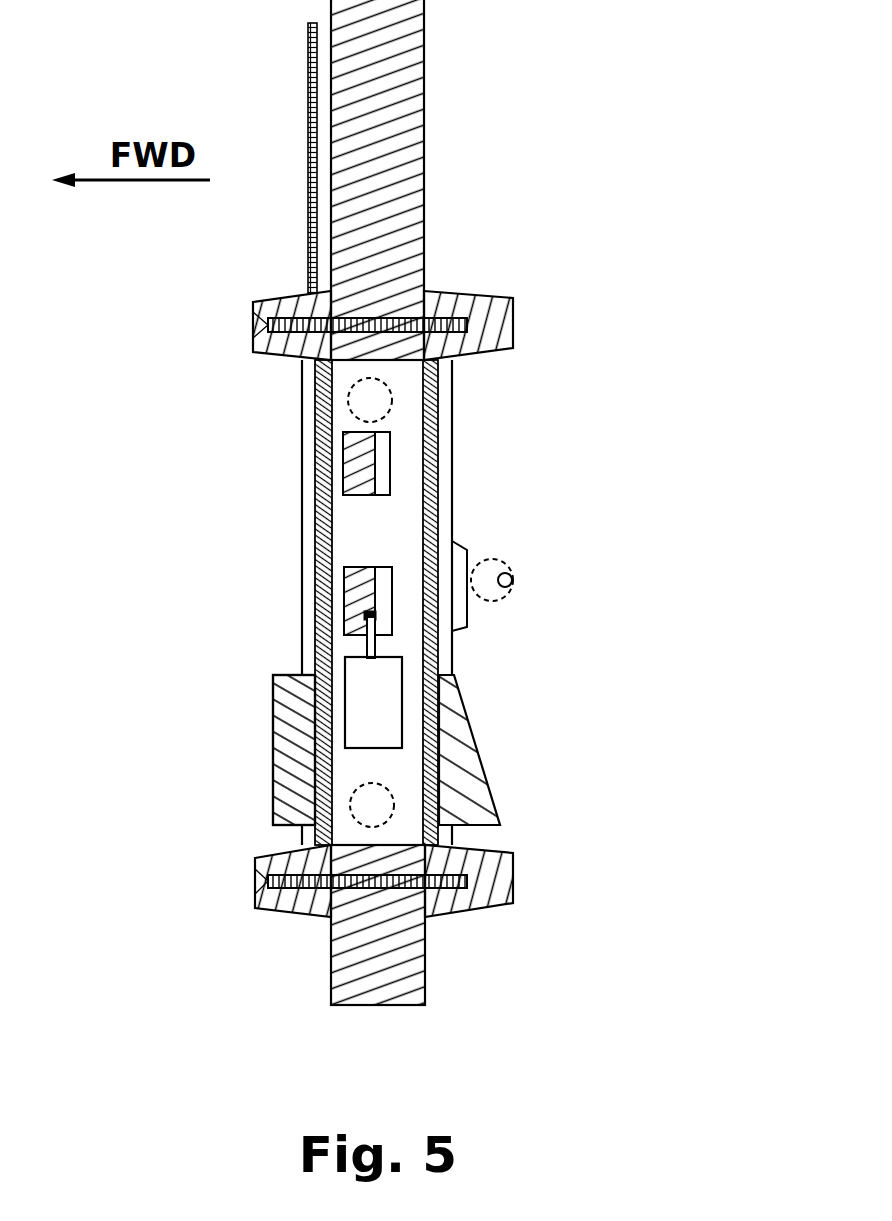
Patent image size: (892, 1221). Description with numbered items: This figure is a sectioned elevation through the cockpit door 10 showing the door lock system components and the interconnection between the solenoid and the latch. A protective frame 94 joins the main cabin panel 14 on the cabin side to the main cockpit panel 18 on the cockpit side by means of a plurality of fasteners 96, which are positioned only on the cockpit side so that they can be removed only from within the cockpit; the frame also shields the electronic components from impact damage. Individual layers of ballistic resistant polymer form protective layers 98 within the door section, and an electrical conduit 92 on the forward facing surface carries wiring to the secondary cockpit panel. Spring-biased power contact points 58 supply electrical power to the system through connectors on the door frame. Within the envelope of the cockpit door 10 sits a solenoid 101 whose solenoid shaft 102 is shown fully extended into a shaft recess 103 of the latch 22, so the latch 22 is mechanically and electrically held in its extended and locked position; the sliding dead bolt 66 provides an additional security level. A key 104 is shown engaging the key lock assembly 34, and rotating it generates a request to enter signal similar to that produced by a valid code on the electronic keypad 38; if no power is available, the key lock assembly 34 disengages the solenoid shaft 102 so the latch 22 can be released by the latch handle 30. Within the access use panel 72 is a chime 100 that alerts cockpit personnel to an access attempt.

The cockpit door 10 is at (424, 165).
The main cabin panel 14 is at (590, 449).
The main cockpit panel 18 is at (152, 463).
The latch 22 is at (354, 581).
The latch handle 30 is at (452, 452).
The key lock assembly 34 is at (466, 562).
The electronic keypad 38 is at (465, 738).
The power contact points 58 is at (392, 396).
The dead bolt 66 is at (355, 462).
The access use panel 72 is at (282, 770).
The electrical conduit 92 is at (312, 92).
The protective frame 94 is at (272, 305).
The fasteners 96 is at (262, 325).
The protective layers 98 is at (322, 512).
The chime 100 is at (290, 708).
The solenoid 101 is at (400, 695).
The solenoid shaft 102 is at (370, 648).
The shaft recess 103 is at (366, 616).
The key 104 is at (506, 594).